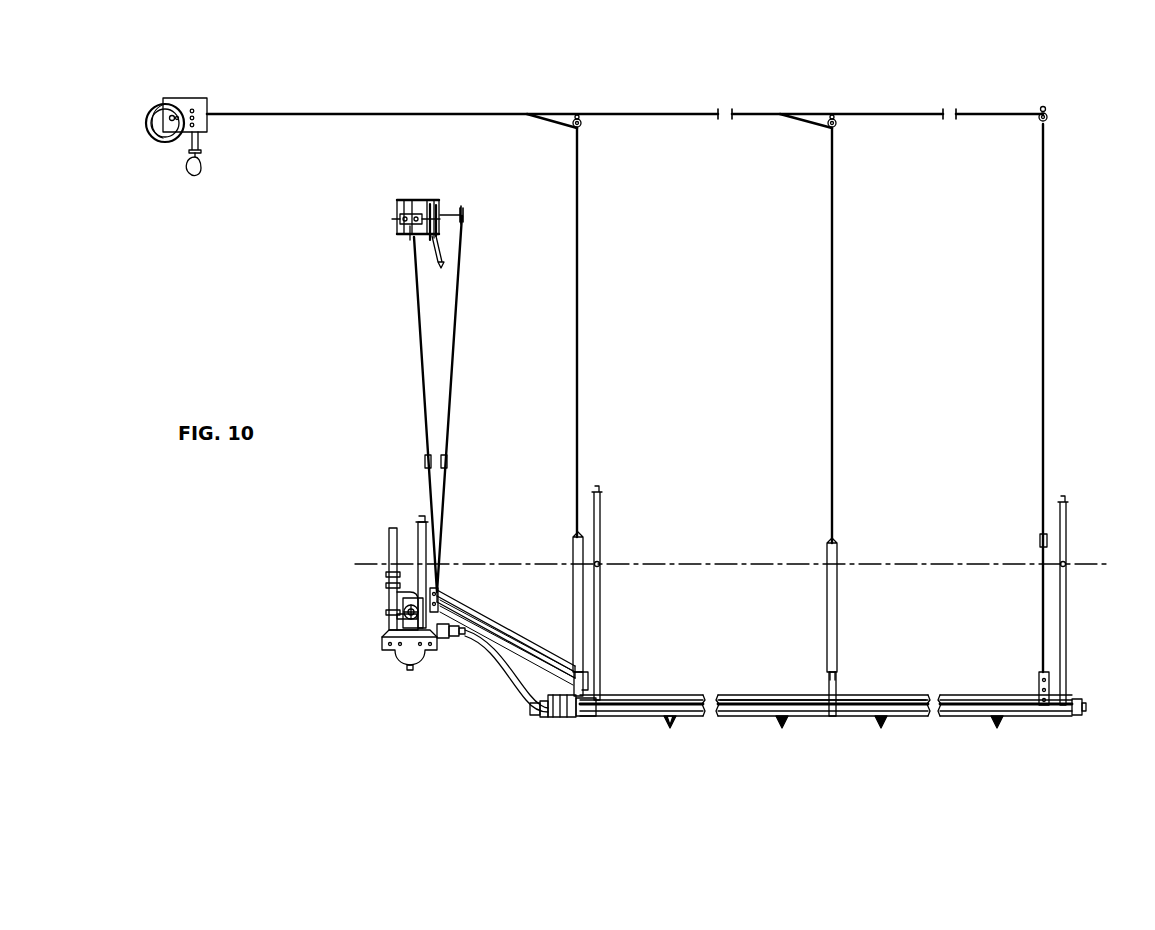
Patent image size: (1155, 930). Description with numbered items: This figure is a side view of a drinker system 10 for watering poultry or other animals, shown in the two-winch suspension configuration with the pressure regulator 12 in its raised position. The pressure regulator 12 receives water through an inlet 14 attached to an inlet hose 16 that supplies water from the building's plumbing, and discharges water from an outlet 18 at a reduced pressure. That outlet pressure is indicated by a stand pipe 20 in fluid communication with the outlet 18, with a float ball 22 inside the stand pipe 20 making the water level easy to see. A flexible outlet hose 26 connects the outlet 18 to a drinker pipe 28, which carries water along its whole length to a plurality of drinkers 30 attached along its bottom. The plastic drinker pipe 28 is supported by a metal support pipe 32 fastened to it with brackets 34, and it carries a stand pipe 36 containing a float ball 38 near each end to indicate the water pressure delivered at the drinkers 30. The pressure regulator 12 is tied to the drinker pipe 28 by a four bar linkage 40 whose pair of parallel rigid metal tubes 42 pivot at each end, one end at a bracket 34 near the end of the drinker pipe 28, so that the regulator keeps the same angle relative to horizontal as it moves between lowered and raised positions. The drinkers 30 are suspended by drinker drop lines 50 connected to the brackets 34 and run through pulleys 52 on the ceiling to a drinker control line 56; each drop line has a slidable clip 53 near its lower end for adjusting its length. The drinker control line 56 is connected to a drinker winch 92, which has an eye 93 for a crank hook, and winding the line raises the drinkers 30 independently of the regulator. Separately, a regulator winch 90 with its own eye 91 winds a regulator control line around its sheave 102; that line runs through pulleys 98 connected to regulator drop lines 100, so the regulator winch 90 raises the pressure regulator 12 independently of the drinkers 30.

The drinker system 10 is at (1050, 738).
The pressure regulator 12 is at (384, 638).
The inlet 14 is at (390, 604).
The inlet hose 16 is at (390, 547).
The outlet 18 is at (449, 638).
The stand pipe 20 is at (420, 526).
The float ball 22 is at (428, 565).
The flexible outlet hose 26 is at (496, 695).
The drinker pipe 28 is at (755, 720).
The drinkers 30 is at (670, 730).
The metal support pipe 32 is at (764, 697).
The brackets 34 is at (585, 690).
The stand pipe 36 is at (600, 494).
The float ball 38 is at (598, 562).
The four bar linkage 40 is at (488, 602).
The parallel rigid metal tubes 42 is at (540, 645).
The drinker drop lines 50 is at (578, 312).
The pulleys 52 is at (582, 125).
The slidable clip 53 is at (425, 460).
The drinker control line 56 is at (770, 116).
The regulator winch 90 is at (405, 200).
The eye 91 is at (442, 268).
The drinker winch 92 is at (190, 98).
The eye 93 is at (195, 175).
The pulleys 98 is at (464, 212).
The regulator drop lines 100 is at (421, 356).
The sheave 102 is at (410, 232).